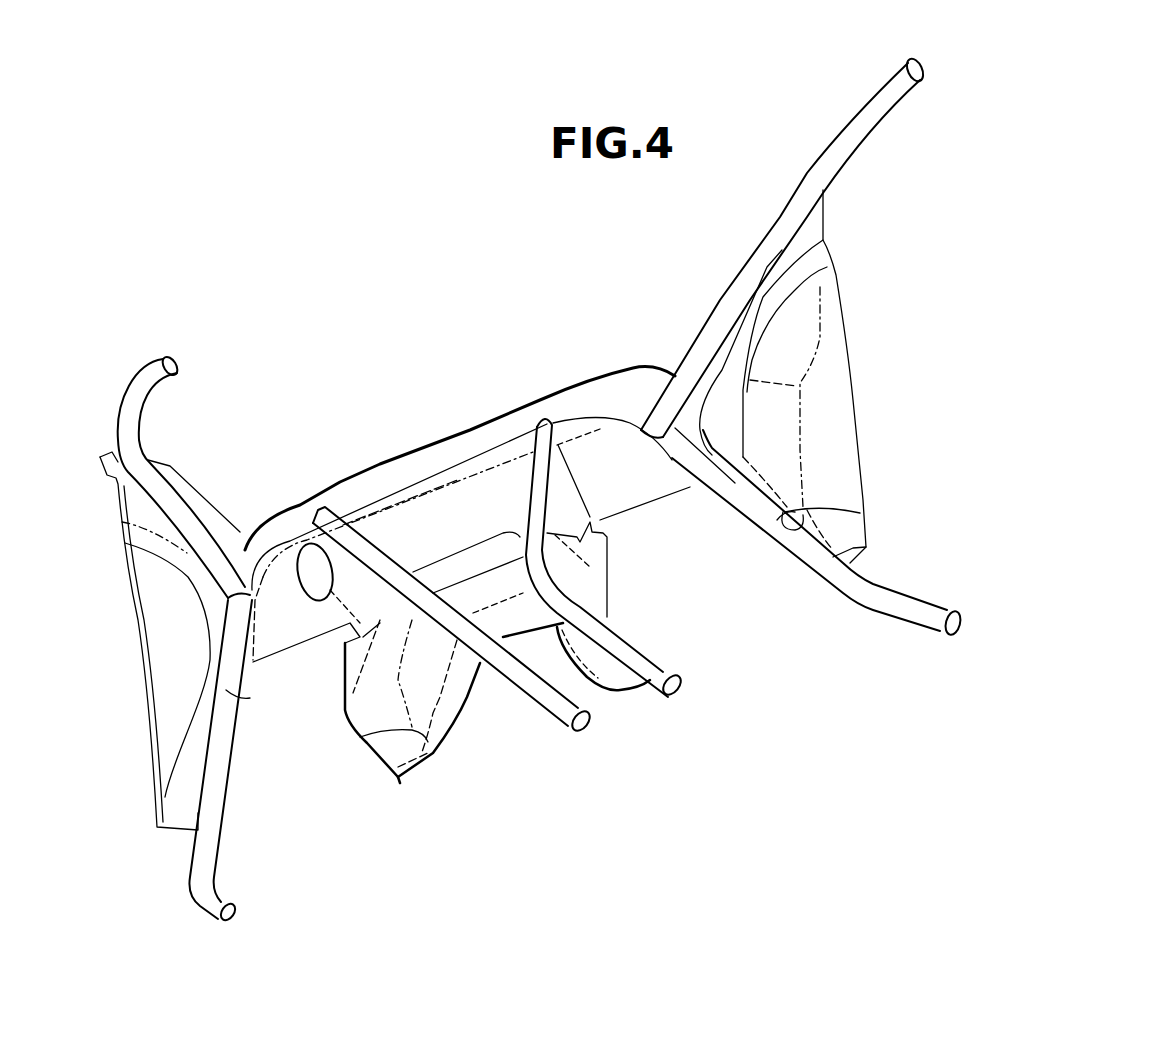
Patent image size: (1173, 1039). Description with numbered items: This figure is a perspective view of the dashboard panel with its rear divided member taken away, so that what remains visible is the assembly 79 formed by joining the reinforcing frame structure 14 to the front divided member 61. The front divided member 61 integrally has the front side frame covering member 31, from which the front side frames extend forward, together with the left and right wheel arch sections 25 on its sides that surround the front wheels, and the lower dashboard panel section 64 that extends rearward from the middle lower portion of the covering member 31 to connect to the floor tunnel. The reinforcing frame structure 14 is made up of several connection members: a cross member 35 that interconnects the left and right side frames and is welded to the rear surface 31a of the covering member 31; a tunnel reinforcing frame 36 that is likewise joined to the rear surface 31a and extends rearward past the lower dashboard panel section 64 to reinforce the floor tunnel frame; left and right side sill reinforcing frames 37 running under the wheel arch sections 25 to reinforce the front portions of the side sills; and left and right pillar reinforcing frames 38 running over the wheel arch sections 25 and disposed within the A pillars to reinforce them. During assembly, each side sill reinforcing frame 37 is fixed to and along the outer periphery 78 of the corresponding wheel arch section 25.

The reinforcing frame structure 14 is at (517, 420).
The wheel arch section 25 is at (138, 668).
The front side frame covering member 31 is at (392, 452).
The rear surface 31a is at (400, 528).
The cross member 35 is at (568, 415).
The tunnel reinforcing frame 36 is at (580, 706).
The side sill reinforcing frame 37 is at (218, 793).
The pillar reinforcing frame 38 is at (167, 346).
The front divided member 61 is at (440, 413).
The lower dashboard panel section 64 is at (430, 772).
The outer periphery 78 is at (240, 707).
The assembly 79 is at (446, 186).